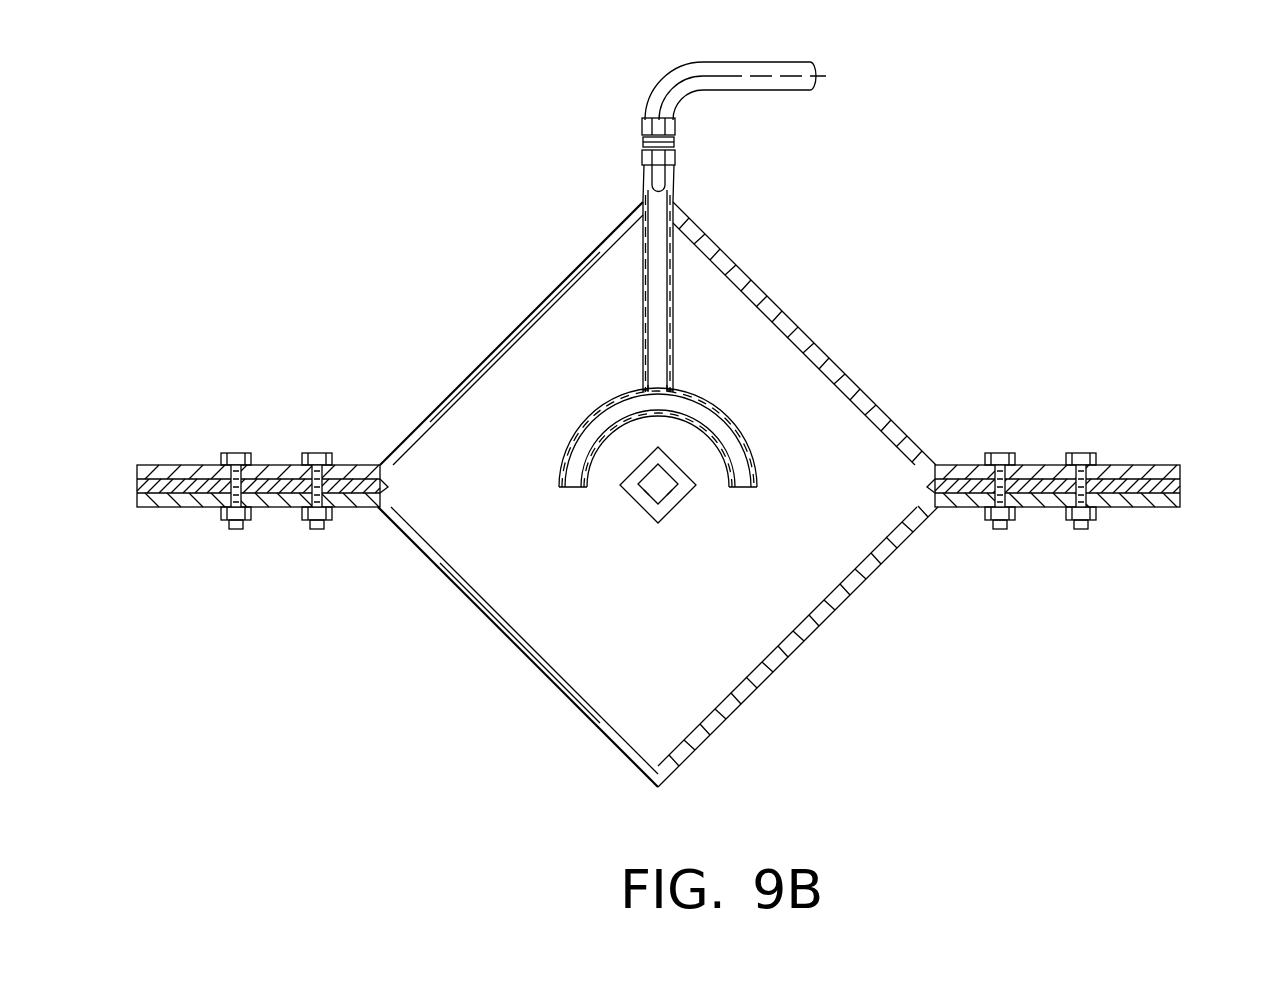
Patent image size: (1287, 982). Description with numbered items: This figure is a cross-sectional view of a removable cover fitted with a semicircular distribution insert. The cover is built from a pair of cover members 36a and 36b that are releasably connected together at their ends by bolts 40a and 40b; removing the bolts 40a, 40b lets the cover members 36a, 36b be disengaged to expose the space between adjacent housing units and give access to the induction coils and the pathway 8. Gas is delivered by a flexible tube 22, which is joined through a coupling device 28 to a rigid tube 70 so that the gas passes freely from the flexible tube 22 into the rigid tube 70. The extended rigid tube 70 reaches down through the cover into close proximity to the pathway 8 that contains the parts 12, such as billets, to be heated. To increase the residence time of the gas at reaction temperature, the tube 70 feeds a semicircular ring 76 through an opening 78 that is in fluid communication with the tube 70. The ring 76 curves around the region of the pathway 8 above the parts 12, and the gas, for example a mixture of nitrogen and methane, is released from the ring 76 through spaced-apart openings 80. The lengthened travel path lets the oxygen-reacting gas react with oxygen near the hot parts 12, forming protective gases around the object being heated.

The pathway 8 is at (628, 488).
The parts 12 is at (672, 498).
The flexible tube 22 is at (717, 72).
The coupling device 28 is at (697, 140).
The cover member 36a is at (792, 318).
The cover member 36b is at (523, 647).
The bolt 40a is at (1183, 486).
The bolt 40b is at (263, 539).
The rigid tube 70 is at (672, 248).
The semicircular ring 76 is at (735, 405).
The opening 78 is at (668, 378).
The spaced-apart openings 80 is at (622, 420).